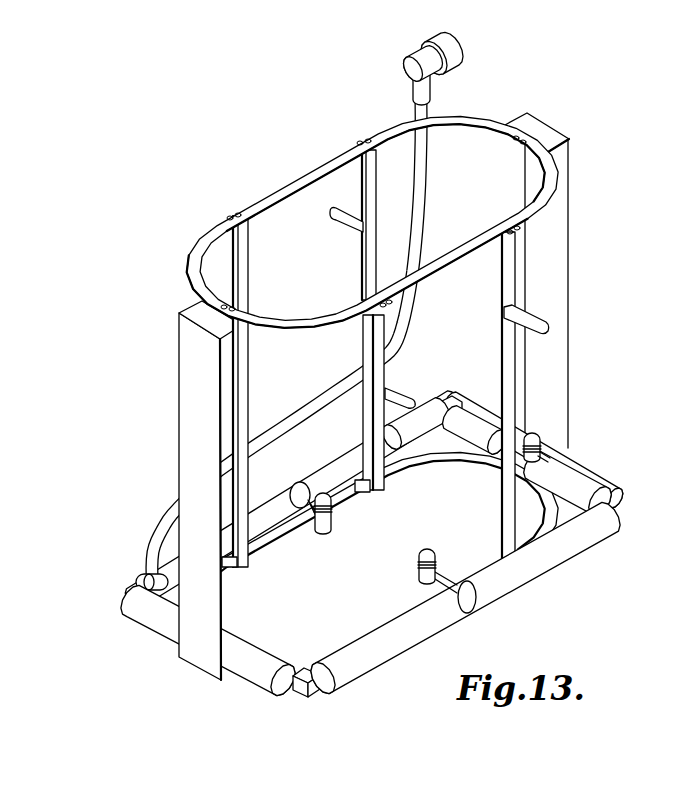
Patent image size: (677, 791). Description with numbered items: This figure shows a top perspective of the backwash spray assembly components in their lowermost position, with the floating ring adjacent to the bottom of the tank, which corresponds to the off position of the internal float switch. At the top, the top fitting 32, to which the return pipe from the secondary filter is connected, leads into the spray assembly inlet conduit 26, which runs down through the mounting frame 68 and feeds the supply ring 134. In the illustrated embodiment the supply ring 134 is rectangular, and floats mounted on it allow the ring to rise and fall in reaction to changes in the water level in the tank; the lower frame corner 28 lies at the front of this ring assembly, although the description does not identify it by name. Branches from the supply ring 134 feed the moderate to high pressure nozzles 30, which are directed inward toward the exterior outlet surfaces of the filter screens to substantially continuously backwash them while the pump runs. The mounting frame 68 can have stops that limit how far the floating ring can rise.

The spray assembly inlet conduit 26 is at (414, 97).
The base frame 28 is at (335, 706).
The nozzles 30 is at (544, 440).
The top fitting 32 is at (450, 42).
The mounting frame 68 is at (578, 226).
The supply ring 134 is at (146, 576).